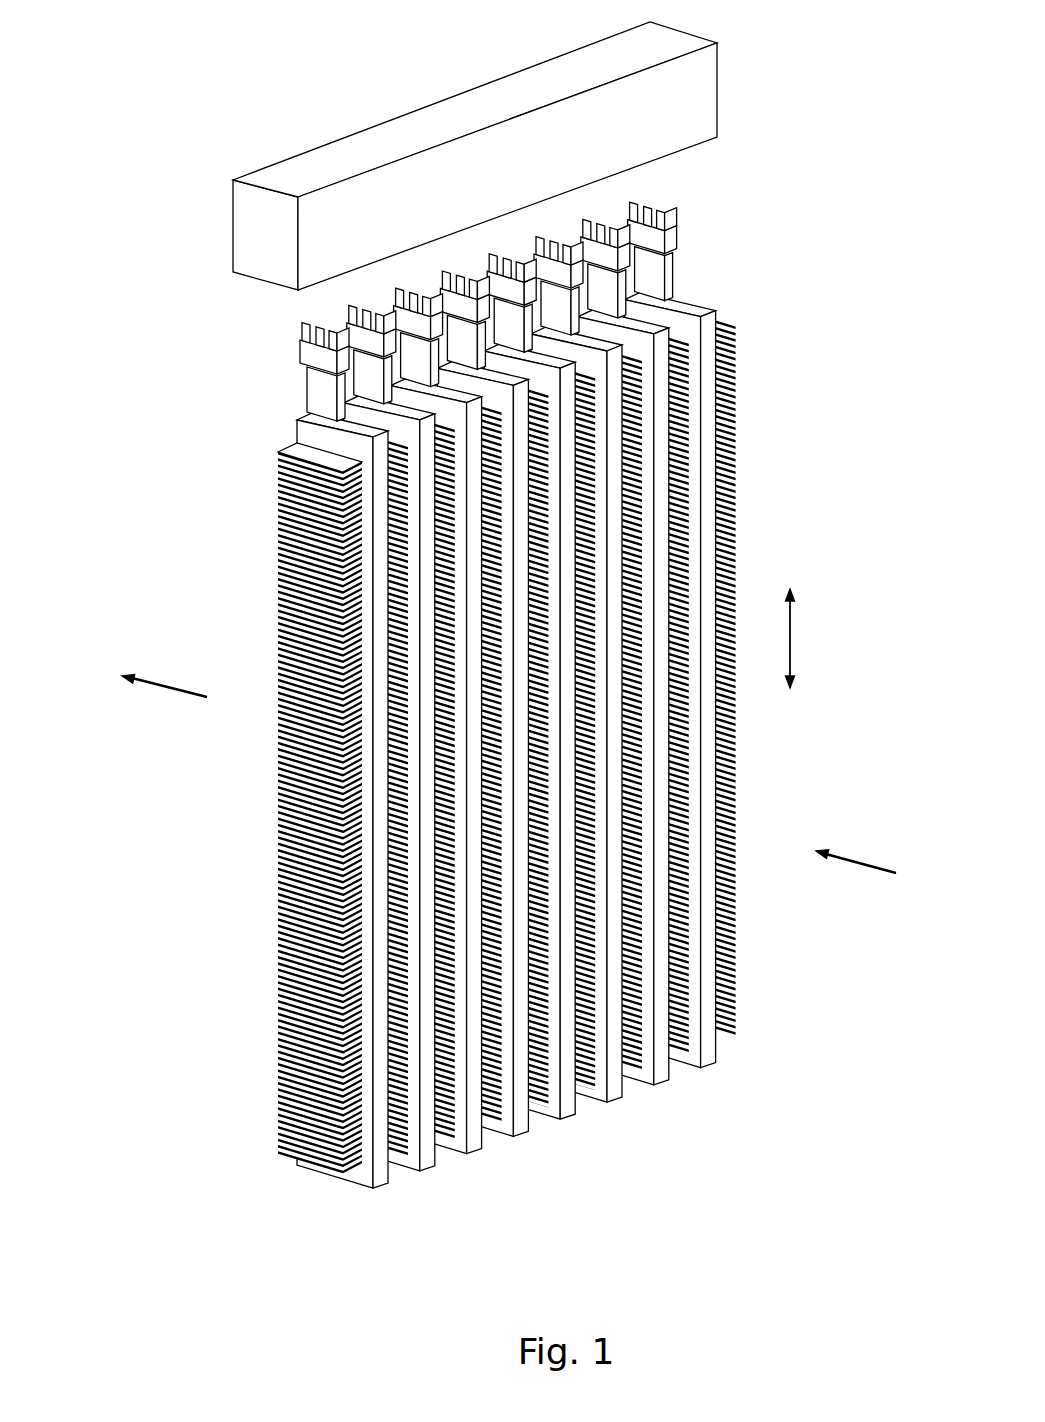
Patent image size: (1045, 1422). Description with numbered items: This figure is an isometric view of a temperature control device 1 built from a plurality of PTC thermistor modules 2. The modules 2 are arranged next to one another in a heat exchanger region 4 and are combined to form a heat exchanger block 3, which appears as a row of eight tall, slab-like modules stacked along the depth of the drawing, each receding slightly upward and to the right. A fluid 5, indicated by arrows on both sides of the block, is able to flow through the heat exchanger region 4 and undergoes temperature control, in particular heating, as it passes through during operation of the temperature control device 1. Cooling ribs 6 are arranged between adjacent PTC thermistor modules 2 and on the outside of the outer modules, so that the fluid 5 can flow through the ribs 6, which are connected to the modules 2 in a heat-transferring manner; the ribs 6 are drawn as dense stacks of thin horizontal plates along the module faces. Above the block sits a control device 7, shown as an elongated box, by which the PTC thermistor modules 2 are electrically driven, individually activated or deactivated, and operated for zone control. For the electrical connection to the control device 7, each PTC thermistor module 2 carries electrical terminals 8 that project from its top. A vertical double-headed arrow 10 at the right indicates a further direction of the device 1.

The temperature control device 1 is at (825, 152).
The PTC thermistor module 2 is at (383, 1188).
The heat exchanger block 3 is at (792, 418).
The heat exchanger region 4 is at (70, 677).
The fluid 5 is at (174, 686).
The cooling ribs 6 is at (722, 318).
The control device 7 is at (506, 183).
The electrical terminals 8 is at (668, 214).
The vertical direction 10 is at (792, 636).